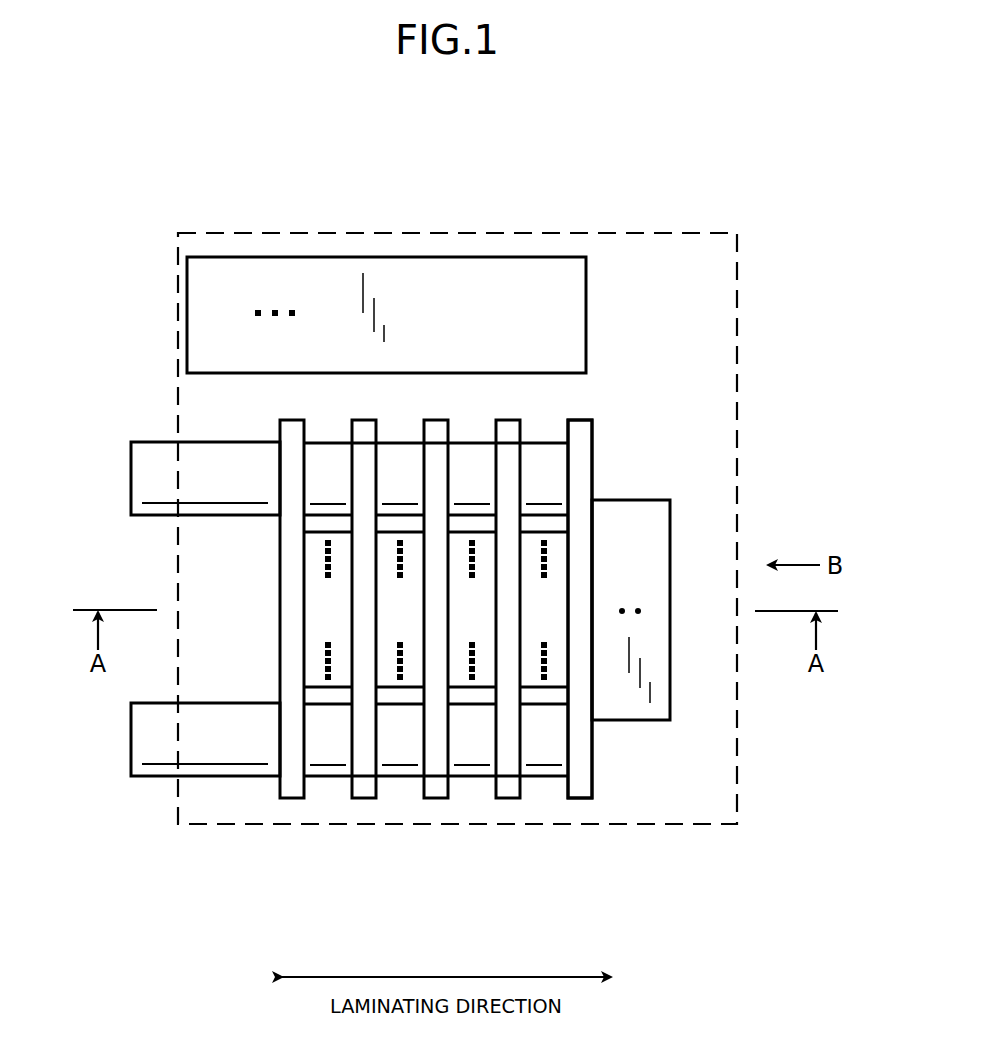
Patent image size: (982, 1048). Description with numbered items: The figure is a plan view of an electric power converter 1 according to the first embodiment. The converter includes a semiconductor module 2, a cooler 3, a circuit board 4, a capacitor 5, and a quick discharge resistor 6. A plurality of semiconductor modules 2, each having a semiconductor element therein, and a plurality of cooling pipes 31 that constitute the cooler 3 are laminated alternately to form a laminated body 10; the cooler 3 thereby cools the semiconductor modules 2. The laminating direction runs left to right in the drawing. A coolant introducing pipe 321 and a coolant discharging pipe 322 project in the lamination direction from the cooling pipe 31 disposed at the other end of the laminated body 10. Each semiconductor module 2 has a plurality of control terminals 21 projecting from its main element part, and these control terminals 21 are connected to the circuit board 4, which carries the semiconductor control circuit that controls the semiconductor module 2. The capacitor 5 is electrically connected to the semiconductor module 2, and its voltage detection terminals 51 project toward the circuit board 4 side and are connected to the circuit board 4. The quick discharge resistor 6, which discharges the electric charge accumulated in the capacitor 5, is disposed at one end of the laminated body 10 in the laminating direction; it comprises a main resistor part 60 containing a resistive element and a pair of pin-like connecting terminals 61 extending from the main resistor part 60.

The electric power converter 1 is at (625, 191).
The circuit board 4 is at (658, 268).
The capacitor 5 is at (425, 296).
The voltage detection terminal 51 is at (276, 310).
The laminated body 10 is at (608, 409).
The semiconductor module 2 is at (535, 600).
The control terminal 21 is at (327, 556).
The cooling pipe 31 is at (357, 788).
The cooler 3 is at (578, 786).
The coolant discharging pipe 322 is at (160, 462).
The coolant introducing pipe 321 is at (163, 758).
The main resistor part 60 is at (653, 582).
The quick discharge resistor 6 is at (642, 549).
The connecting terminal 61 is at (639, 613).